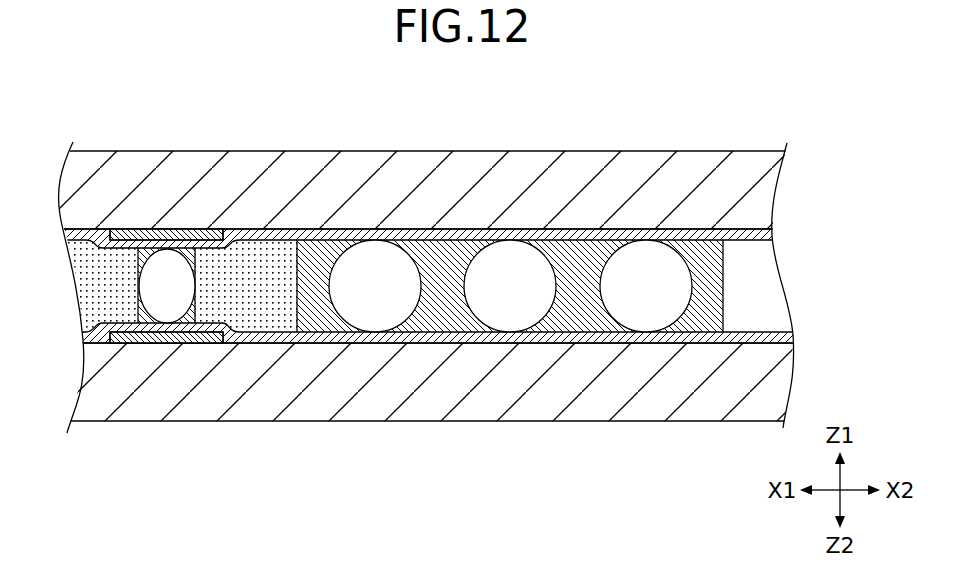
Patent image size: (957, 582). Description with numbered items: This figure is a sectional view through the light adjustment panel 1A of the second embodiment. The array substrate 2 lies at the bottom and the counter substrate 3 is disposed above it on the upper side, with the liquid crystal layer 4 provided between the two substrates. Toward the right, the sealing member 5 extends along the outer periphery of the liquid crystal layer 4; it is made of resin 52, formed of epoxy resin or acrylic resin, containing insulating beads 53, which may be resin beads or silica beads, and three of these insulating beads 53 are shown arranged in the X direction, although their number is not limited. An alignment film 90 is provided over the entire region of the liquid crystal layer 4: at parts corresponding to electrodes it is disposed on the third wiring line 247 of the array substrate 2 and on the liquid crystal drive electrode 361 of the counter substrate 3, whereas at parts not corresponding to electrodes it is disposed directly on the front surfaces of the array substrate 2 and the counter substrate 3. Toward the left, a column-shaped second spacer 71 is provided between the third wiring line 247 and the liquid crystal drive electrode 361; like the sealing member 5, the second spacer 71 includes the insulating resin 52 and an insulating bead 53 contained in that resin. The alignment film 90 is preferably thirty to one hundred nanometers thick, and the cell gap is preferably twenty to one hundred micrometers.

The light adjustment panel 1A is at (840, 90).
The array substrate 2 is at (780, 384).
The counter substrate 3 is at (780, 194).
The liquid crystal layer 4 is at (90, 284).
The sealing member 5 is at (518, 105).
The resin 52 is at (190, 248).
The insulating bead 53 is at (165, 267).
The second spacer 71 is at (180, 105).
The alignment film 90 is at (97, 242).
The third wiring line 247 is at (113, 340).
The liquid crystal drive electrode 361 is at (153, 235).